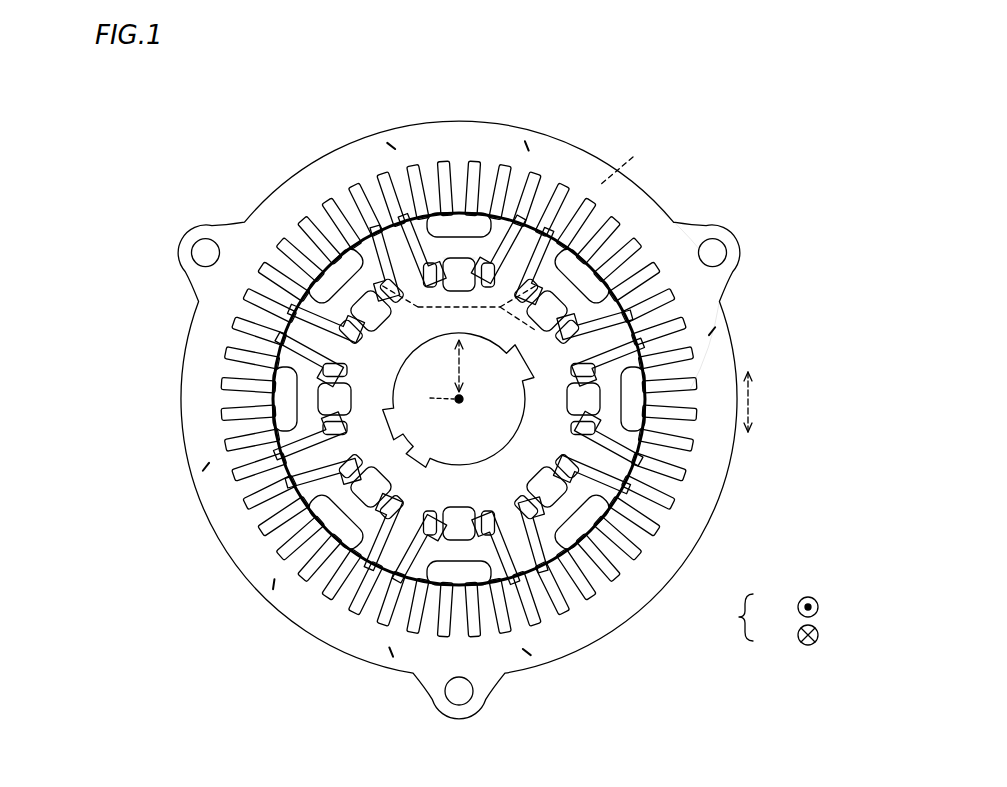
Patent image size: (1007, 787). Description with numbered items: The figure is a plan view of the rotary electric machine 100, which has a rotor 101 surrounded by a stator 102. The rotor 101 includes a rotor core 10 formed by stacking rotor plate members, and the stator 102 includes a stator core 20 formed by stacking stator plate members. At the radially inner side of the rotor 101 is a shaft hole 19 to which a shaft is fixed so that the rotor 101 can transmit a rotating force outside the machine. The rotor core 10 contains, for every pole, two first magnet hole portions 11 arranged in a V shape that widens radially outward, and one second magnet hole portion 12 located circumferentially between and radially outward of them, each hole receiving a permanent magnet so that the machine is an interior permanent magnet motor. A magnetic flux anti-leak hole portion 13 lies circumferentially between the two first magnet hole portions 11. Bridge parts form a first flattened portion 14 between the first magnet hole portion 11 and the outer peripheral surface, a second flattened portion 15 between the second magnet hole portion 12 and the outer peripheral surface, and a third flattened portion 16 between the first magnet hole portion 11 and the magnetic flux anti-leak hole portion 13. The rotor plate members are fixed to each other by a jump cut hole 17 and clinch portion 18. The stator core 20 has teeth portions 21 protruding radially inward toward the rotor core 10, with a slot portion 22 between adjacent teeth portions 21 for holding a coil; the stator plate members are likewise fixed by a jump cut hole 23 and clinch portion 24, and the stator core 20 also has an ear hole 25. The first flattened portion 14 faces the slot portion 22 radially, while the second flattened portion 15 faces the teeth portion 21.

The rotary electric machine 100 is at (268, 86).
The stator 102 is at (417, 418).
The stator core 20 is at (300, 182).
The rotor 101 is at (344, 391).
The rotor core 10 is at (344, 391).
The first magnet hole portion 11 is at (385, 215).
The second magnet hole portion 12 is at (450, 258).
The magnetic flux anti-leak hole portion 13 is at (472, 258).
The first flattened portion 14 is at (393, 255).
The second flattened portion 15 is at (430, 262).
The third flattened portion 16 is at (451, 334).
The jump cut hole 17 is at (777, 328).
The clinch portion 18 is at (722, 285).
The shaft hole 19 is at (410, 438).
The teeth portion 21 is at (297, 212).
The slot portion 22 is at (318, 258).
The jump cut hole 23 is at (729, 185).
The clinch portion 24 is at (642, 212).
The ear hole 25 is at (193, 258).